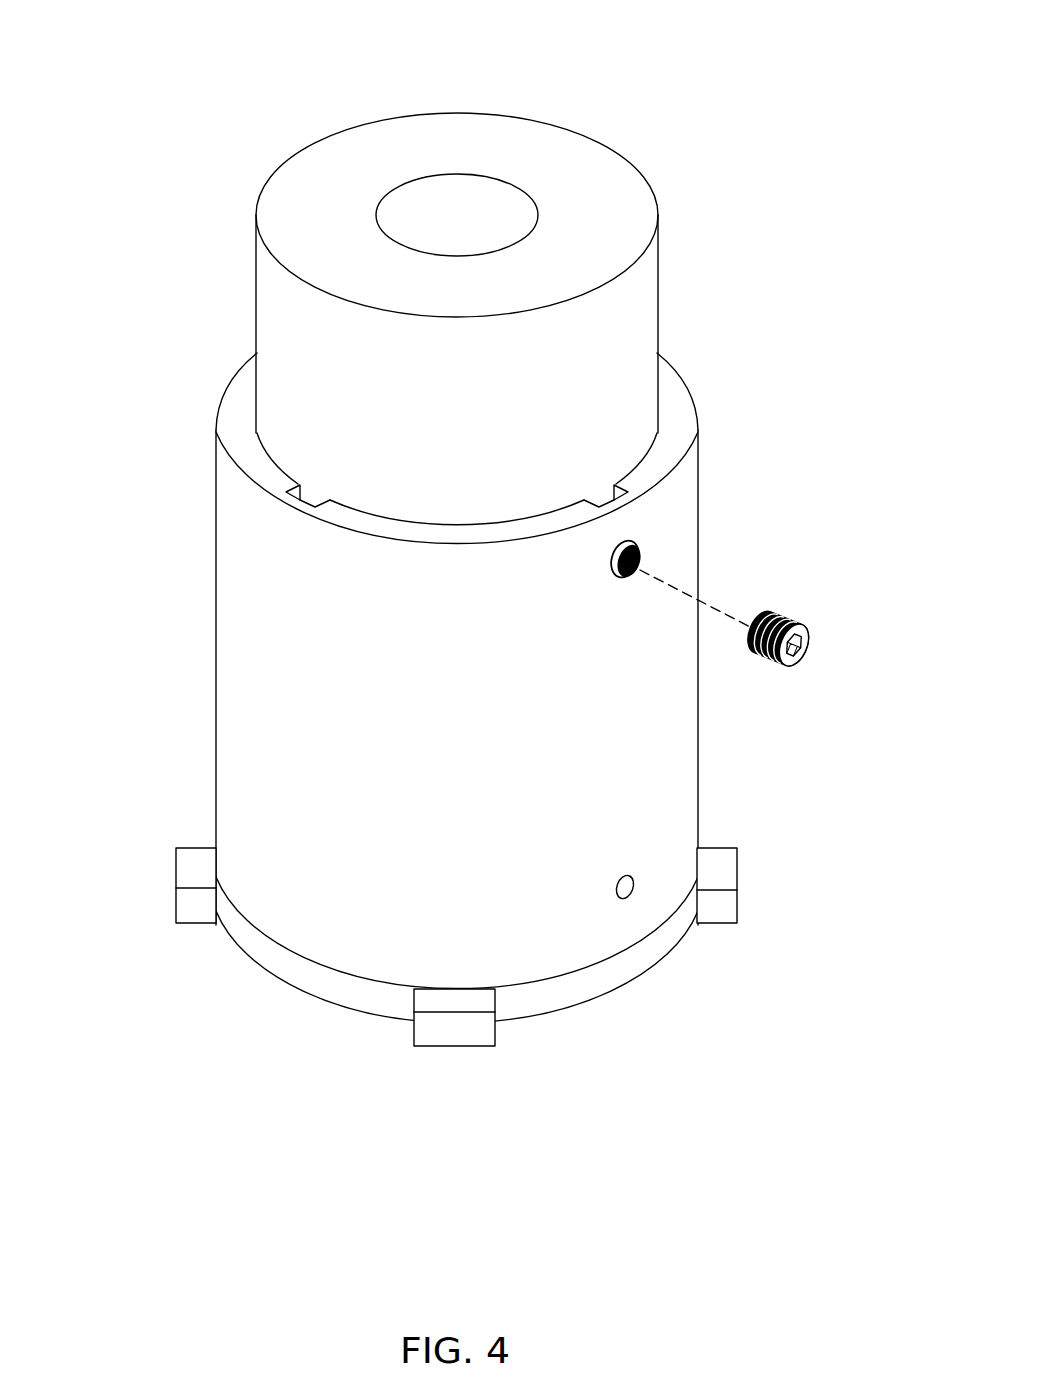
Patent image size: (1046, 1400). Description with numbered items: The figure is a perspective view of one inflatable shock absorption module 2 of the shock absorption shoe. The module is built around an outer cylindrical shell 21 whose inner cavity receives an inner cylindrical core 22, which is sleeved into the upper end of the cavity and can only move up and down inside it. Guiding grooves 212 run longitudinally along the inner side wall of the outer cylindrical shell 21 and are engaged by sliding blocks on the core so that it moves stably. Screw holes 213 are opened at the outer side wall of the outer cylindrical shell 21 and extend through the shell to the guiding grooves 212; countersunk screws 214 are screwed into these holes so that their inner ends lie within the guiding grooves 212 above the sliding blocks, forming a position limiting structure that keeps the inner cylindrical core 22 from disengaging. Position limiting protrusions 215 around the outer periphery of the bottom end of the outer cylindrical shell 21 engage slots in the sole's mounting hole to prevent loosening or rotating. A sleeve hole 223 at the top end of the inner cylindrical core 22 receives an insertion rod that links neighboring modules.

The inflatable shock absorption module 2 is at (500, 639).
The outer cylindrical shell 21 is at (275, 687).
The inner cylindrical core 22 is at (296, 337).
The guiding grooves 212 is at (286, 492).
The screw holes 213 is at (639, 554).
The countersunk screws 214 is at (807, 632).
The position limiting protrusions 215 is at (189, 907).
The sleeve holes 223 is at (466, 211).